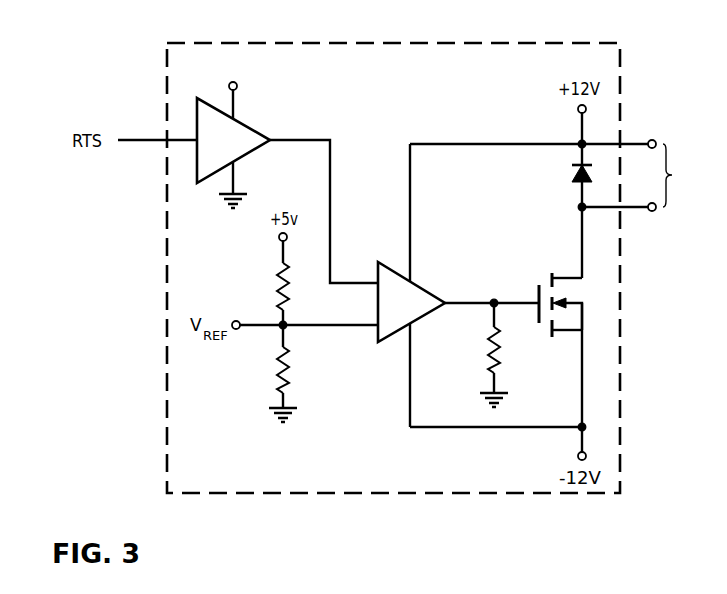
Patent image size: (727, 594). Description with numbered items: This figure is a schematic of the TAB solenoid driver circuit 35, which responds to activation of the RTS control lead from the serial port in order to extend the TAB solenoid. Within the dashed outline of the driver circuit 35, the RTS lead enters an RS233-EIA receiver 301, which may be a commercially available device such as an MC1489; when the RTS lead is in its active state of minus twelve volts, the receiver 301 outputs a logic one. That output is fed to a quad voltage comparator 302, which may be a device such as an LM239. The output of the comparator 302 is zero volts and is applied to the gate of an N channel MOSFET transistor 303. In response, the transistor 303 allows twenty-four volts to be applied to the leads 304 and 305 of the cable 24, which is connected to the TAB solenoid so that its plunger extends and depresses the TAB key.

The TAB solenoid driver circuit 35 is at (528, 43).
The RS233-EIA receiver 301 is at (248, 127).
The quad voltage comparator 302 is at (415, 283).
The N channel MOSFET transistor 303 is at (547, 274).
The lead 304 is at (656, 140).
The lead 305 is at (656, 211).
The cable 24 is at (672, 175).